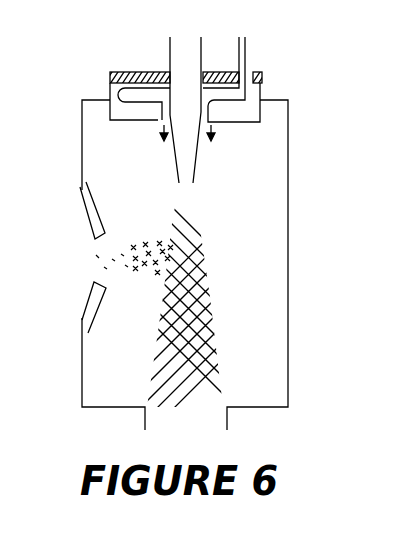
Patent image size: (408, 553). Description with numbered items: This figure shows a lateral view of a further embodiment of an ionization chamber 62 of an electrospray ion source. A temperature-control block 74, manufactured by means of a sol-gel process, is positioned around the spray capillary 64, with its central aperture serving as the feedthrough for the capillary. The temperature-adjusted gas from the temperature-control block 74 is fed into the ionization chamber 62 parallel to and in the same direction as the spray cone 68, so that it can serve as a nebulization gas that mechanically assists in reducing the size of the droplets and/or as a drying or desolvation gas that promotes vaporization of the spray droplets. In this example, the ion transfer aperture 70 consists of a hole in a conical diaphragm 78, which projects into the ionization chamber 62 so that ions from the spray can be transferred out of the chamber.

The ionization chamber 62 is at (185, 265).
The spray capillary 64 is at (187, 110).
The spray cone 68 is at (205, 300).
The ion transfer aperture 70 is at (119, 258).
The temperature-control block 74 is at (168, 79).
The conical diaphragm 78 is at (101, 257).